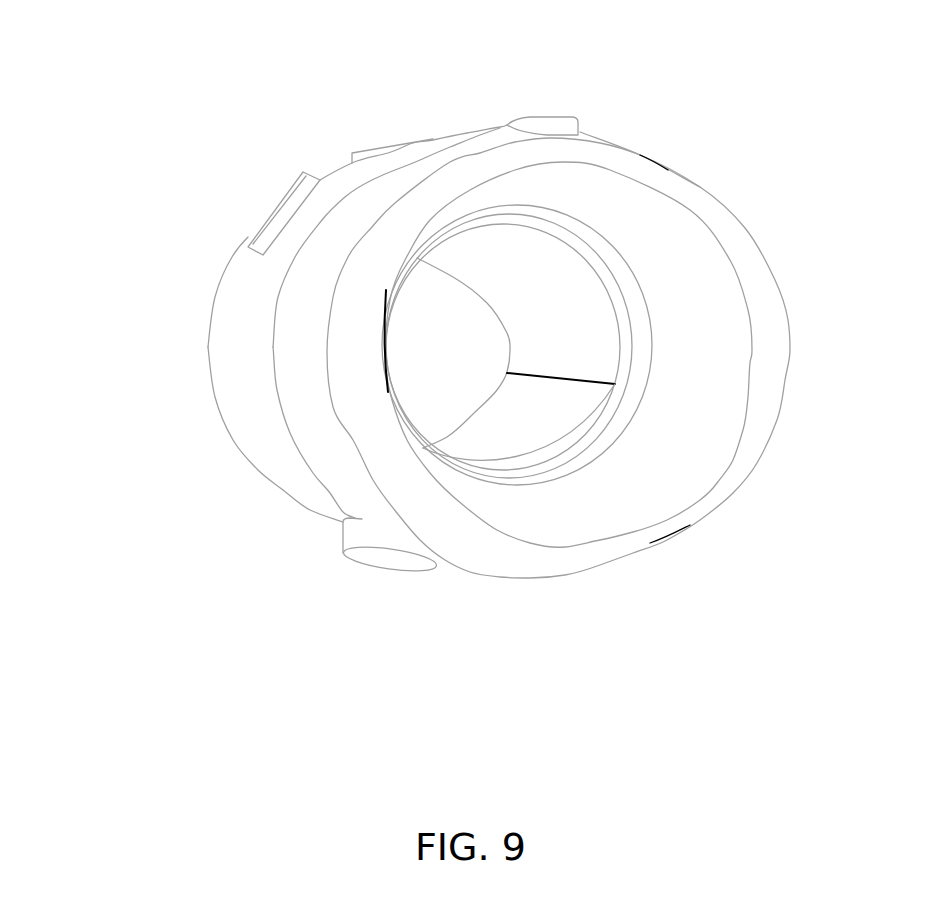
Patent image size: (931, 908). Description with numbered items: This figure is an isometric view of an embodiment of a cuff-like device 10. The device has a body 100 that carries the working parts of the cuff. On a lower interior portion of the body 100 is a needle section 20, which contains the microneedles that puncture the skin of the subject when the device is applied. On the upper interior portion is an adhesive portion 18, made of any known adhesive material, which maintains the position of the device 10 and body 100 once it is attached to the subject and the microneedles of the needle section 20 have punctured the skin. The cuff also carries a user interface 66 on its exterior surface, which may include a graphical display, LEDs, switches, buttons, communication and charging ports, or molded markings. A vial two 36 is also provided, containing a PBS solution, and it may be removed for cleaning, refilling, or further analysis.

The body 100 is at (176, 78).
The cuff-like device 10 is at (214, 396).
The vial two 36 is at (278, 202).
The user interface 66 is at (480, 126).
The adhesive portion 18 is at (480, 250).
The needle section 20 is at (545, 430).